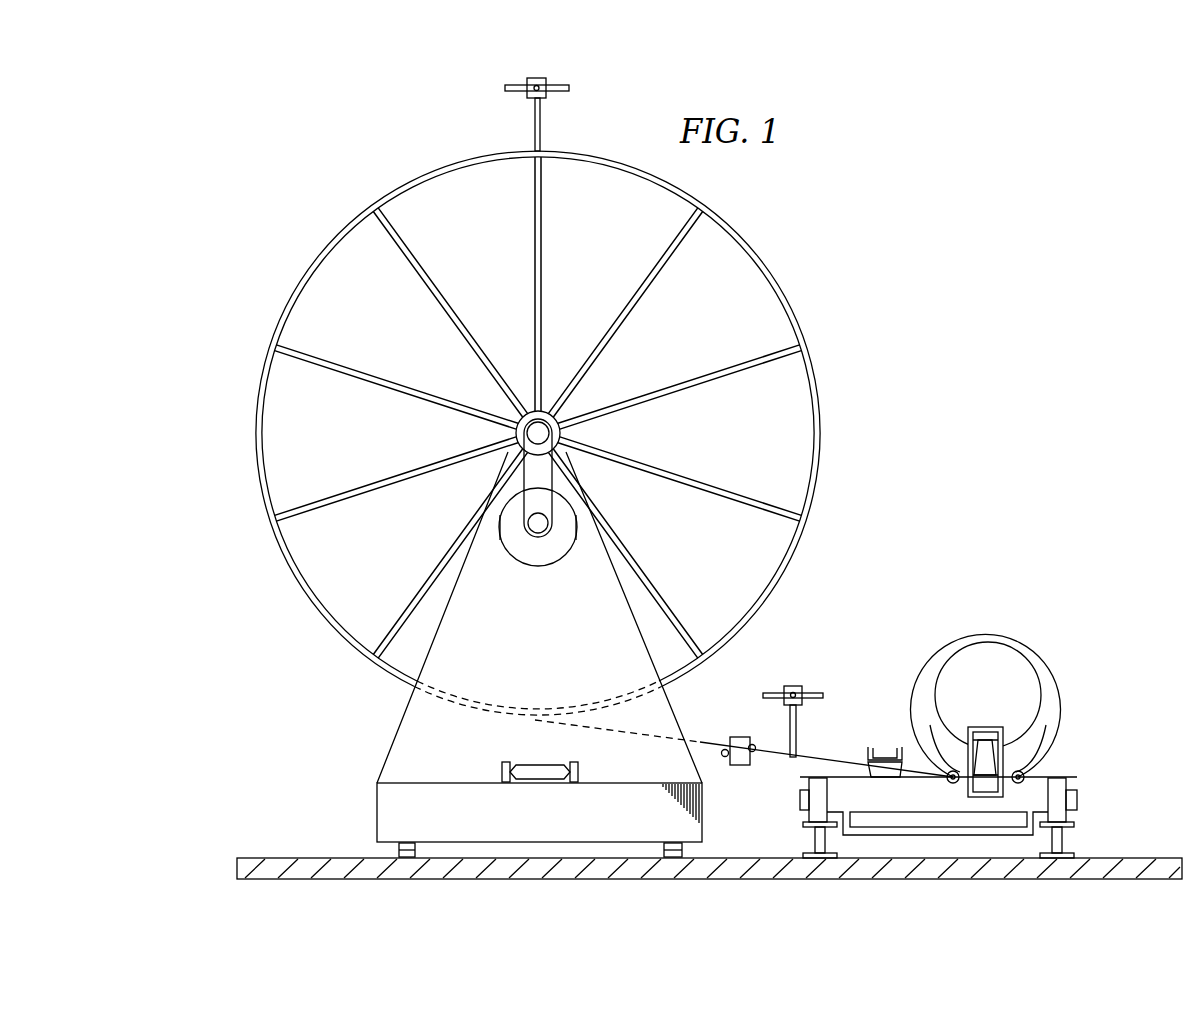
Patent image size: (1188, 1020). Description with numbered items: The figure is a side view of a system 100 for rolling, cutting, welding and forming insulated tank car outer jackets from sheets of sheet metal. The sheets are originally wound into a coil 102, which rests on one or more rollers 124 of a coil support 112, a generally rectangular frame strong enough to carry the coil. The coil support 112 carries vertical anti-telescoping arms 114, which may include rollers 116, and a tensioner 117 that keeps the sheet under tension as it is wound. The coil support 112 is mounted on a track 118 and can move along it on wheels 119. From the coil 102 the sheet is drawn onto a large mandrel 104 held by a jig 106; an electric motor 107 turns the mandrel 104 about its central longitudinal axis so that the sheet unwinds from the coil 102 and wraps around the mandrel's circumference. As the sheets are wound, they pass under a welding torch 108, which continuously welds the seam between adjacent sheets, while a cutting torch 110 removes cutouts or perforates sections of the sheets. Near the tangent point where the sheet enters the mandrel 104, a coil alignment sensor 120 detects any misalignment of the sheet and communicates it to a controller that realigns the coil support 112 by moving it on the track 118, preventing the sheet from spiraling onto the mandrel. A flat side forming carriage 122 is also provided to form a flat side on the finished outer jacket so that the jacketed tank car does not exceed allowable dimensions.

The system 100 is at (1097, 373).
The coil 102 is at (985, 621).
The mandrel 104 is at (819, 395).
The jig 106 is at (394, 743).
The electric motor 107 is at (540, 556).
The welding torch 108 is at (547, 85).
The cutting torch 110 is at (789, 686).
The coil support 112 is at (1078, 765).
The anti-telescoping arm 114 is at (1040, 707).
The roller 116 is at (978, 760).
The tensioner 117 is at (867, 752).
The track 118 is at (1062, 838).
The wheel 119 is at (1062, 800).
The coil alignment sensor 120 is at (741, 766).
The flat side forming carriage 122 is at (529, 762).
The roller 124 is at (947, 772).